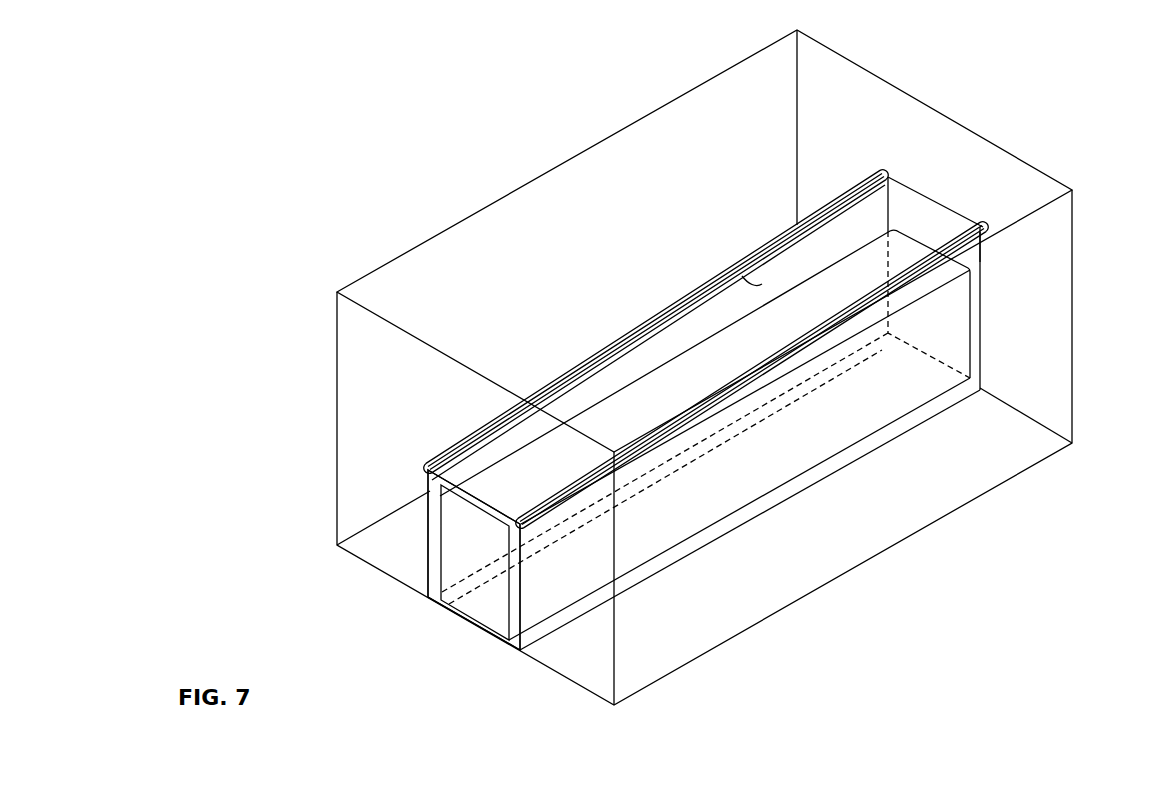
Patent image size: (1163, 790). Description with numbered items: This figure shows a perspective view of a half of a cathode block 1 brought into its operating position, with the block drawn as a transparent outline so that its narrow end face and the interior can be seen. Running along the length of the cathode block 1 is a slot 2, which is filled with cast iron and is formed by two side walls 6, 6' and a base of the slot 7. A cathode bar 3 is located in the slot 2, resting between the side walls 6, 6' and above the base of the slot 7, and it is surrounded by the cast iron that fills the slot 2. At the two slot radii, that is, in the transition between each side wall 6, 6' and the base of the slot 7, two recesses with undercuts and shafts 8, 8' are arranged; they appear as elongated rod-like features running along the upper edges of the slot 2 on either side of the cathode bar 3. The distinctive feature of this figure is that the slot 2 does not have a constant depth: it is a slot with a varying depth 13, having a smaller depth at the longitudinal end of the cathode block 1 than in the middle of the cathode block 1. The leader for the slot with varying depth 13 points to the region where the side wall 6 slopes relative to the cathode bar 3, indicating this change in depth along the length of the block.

The cathode block 1 is at (391, 562).
The slot 2 is at (519, 646).
The cathode bar 3 is at (478, 608).
The side wall of slot 6 is at (690, 268).
The side wall of slot 6' is at (1063, 249).
The base of the slot 7 is at (933, 217).
The recess with undercut and shaft 8 is at (752, 455).
The recess with undercut and shaft 8' is at (578, 322).
The slot with varying depth 13 is at (742, 276).